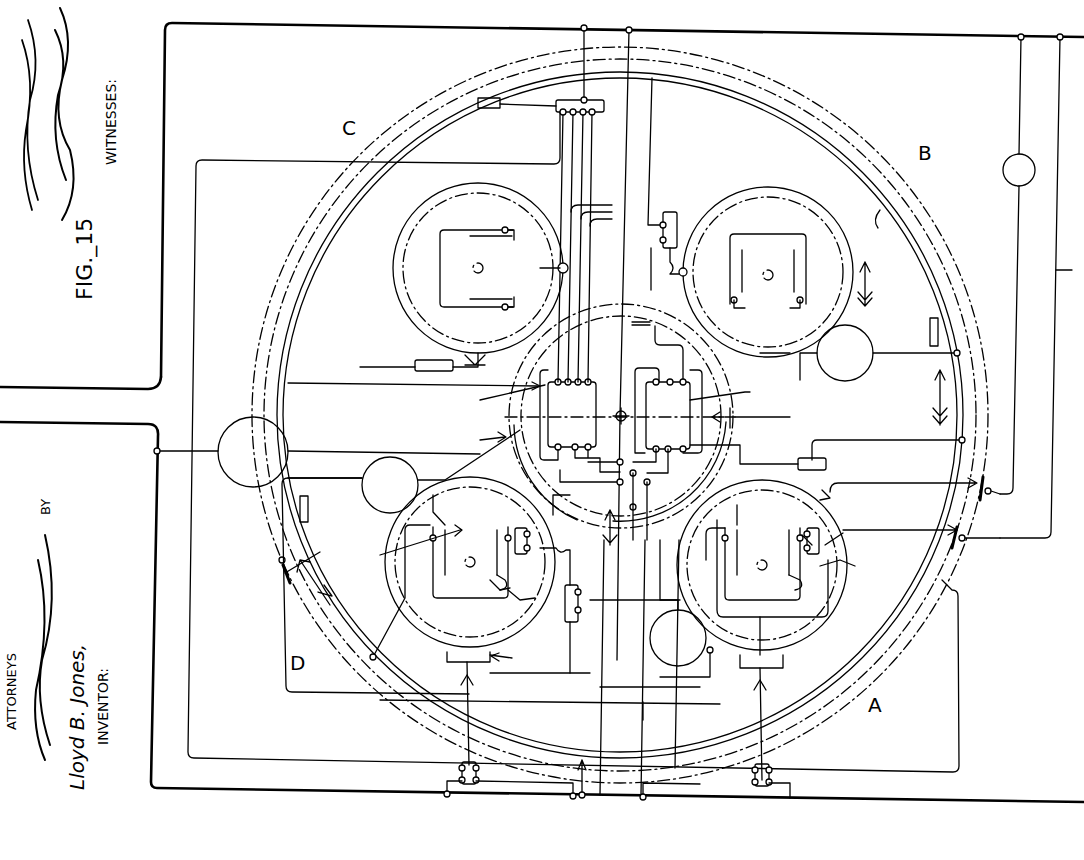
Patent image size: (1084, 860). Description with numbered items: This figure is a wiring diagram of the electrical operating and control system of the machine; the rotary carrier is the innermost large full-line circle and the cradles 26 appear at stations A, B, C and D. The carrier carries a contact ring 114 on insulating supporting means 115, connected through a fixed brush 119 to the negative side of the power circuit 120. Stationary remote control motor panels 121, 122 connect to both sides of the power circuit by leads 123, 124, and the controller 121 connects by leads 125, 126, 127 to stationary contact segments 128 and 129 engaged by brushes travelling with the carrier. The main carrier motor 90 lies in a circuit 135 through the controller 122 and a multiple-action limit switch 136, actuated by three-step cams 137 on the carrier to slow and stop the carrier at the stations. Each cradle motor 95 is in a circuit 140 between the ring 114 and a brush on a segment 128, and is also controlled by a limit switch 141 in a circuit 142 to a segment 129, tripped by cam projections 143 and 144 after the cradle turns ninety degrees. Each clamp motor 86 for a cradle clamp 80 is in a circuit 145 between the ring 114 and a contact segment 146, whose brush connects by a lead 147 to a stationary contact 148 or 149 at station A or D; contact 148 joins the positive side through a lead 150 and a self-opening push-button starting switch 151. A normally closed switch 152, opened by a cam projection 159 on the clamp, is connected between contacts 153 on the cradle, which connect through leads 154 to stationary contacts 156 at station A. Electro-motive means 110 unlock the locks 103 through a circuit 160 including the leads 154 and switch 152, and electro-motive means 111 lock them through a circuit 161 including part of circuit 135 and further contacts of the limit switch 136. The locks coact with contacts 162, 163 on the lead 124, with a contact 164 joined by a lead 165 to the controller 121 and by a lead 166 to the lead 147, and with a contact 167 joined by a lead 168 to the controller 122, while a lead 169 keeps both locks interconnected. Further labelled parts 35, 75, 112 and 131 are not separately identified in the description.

The cradle 26 is at (438, 200).
The contact bracket 35 is at (619, 415).
The rotatable drum 75 is at (812, 108).
The cradle clamp 80 is at (616, 384).
The motor 86 is at (619, 405).
The main motor 90 is at (221, 442).
The motor 95 is at (617, 495).
The lock 103 is at (616, 657).
The electro-motive means 110 is at (625, 774).
The electro-motive means 111 is at (581, 771).
The conductor 112 is at (635, 724).
The contact ring 114 is at (845, 150).
The supporting means 115 is at (617, 407).
The fixed brush 119 is at (568, 757).
The power supply circuit 120 is at (542, 412).
The controller 121 is at (674, 411).
The controller 122 is at (568, 415).
The lead 123 is at (623, 576).
The lead 124 is at (643, 516).
The lead 125 is at (675, 475).
The lead 126 is at (644, 399).
The lead 127 is at (665, 353).
The stationary contact segment 128 is at (633, 429).
The stationary contact segment 129 is at (649, 315).
The conductor 131 is at (696, 714).
The circuit 135 is at (580, 42).
The multiple-action limit switch 136 is at (604, 108).
The three-step cam 137 is at (930, 325).
The circuit 140 is at (624, 411).
The limit switch 141 is at (607, 428).
The circuit 142 is at (652, 195).
The cam projection 143 is at (640, 427).
The cam projection 144 is at (629, 374).
The circuit 145 is at (620, 579).
The contact segment 146 is at (613, 499).
The lead 147 is at (631, 497).
The stationary contact 148 is at (1001, 494).
The stationary contact 149 is at (280, 573).
The lead 150 is at (1003, 170).
The self-opening push button starting switch 151 is at (1030, 158).
The switch 152 is at (676, 522).
The contact 153 is at (851, 543).
The lead 154 is at (900, 539).
The stationary contact 156 is at (978, 545).
The cam projection 159 is at (669, 577).
The circuit 160 is at (691, 702).
The circuit 161 is at (573, 457).
The contact 162 is at (774, 677).
The contact 163 is at (515, 654).
The contact 164 is at (778, 633).
The lead 165 is at (743, 504).
The lead 166 is at (489, 602).
The contact 167 is at (451, 713).
The lead 168 is at (522, 552).
The lead 169 is at (550, 677).